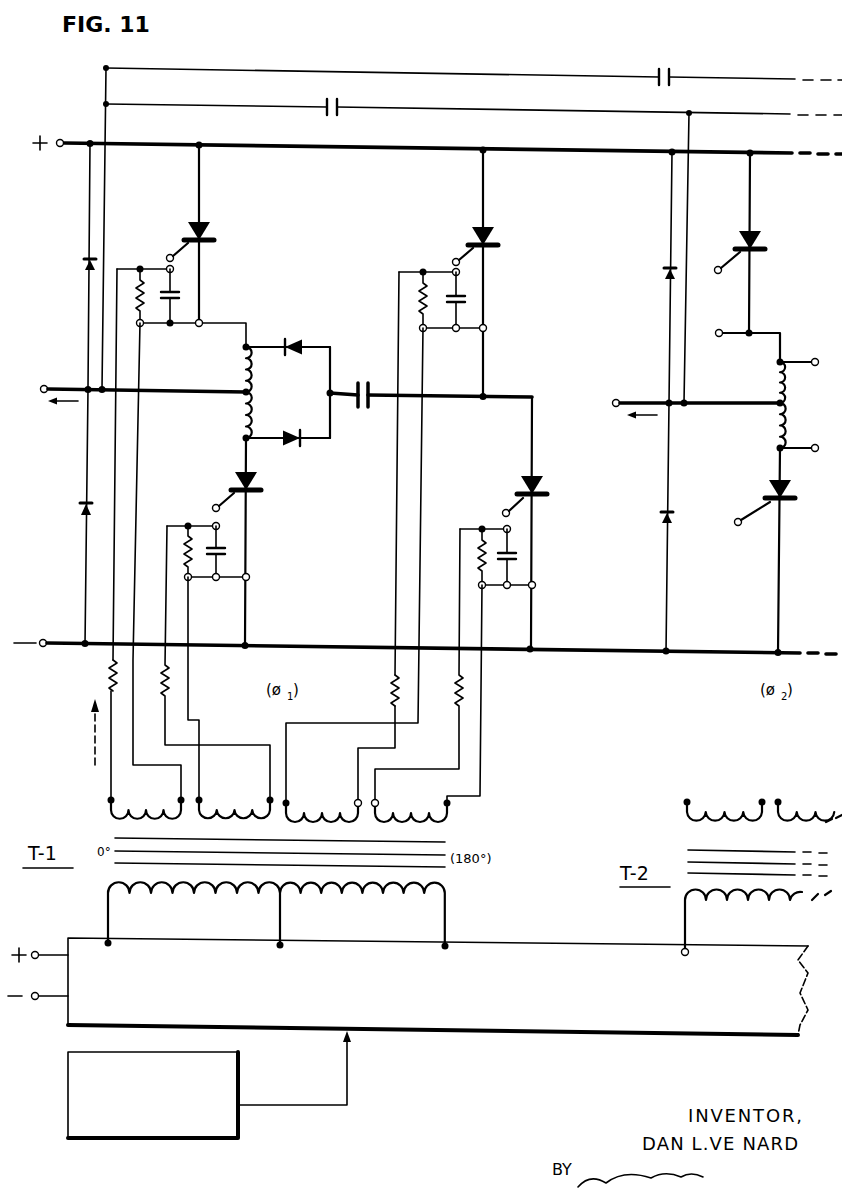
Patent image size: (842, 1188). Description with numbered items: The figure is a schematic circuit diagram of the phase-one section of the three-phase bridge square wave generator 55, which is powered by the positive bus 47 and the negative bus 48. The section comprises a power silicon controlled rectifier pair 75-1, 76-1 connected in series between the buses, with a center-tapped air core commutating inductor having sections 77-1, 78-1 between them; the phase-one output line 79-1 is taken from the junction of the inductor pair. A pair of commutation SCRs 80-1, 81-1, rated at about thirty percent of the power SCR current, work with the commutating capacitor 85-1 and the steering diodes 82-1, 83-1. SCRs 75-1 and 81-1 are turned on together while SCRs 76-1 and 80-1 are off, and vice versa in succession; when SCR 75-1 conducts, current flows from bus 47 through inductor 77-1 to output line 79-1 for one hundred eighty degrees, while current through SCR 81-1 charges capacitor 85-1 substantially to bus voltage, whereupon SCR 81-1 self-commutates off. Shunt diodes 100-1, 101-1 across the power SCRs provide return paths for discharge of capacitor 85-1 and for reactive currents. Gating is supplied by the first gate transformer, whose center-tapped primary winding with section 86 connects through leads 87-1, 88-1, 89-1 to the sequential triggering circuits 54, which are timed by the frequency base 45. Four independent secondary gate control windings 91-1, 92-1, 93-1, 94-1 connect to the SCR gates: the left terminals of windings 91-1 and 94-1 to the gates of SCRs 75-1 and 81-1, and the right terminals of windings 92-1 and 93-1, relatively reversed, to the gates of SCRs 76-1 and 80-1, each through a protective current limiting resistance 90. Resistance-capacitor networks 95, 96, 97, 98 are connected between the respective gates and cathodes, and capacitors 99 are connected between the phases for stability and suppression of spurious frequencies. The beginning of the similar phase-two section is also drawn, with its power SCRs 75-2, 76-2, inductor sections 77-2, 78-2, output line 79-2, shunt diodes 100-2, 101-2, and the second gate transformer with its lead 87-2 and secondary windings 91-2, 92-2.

The frequency base 45 is at (240, 1131).
The positive D.C. bus 47 is at (150, 149).
The negative D.C. bus 48 is at (65, 642).
The sequential triggering circuits 54 is at (438, 986).
The square wave generator 55 is at (582, 735).
The power silicon controlled rectifier 75-1 is at (204, 236).
The power silicon controlled rectifier 75-2 is at (744, 244).
The power silicon controlled rectifier 76-1 is at (258, 488).
The power silicon controlled rectifier 76-2 is at (773, 488).
The inductor section 77-1 is at (252, 375).
The inductor section 77-2 is at (782, 382).
The inductor section 78-1 is at (252, 400).
The inductor section 78-2 is at (782, 422).
The bridge output lead 79-1 is at (63, 386).
The bridge output lead 79-2 is at (633, 401).
The commutation silicon controlled rectifier 80-1 is at (490, 237).
The commutation silicon controlled rectifier 81-1 is at (542, 490).
The steering diode 82-1 is at (295, 338).
The steering diode 83-1 is at (297, 431).
The capacitor 85-1 is at (363, 383).
The primary winding section 86 is at (222, 885).
The lead 87-1 is at (110, 924).
The lead 87-2 is at (687, 928).
The lead 88-1 is at (283, 931).
The lead 89-1 is at (446, 924).
The current limiting resistance 90 is at (110, 684).
The secondary gate control winding 91-1 is at (160, 794).
The secondary gate control winding 91-2 is at (720, 813).
The secondary gate control winding 92-1 is at (250, 795).
The secondary gate control winding 92-2 is at (809, 811).
The secondary gate control winding 93-1 is at (336, 796).
The secondary gate control winding 94-1 is at (425, 796).
The resistance-capacitor network 95 is at (152, 284).
The resistance-capacitor network 96 is at (200, 547).
The resistance-capacitor network 97 is at (439, 285).
The resistance-capacitor network 98 is at (491, 541).
The capacitor 99 is at (668, 86).
The shunt diode 100-1 is at (86, 266).
The shunt diode 100-2 is at (664, 272).
The shunt diode 101-1 is at (78, 511).
The shunt diode 101-2 is at (665, 520).